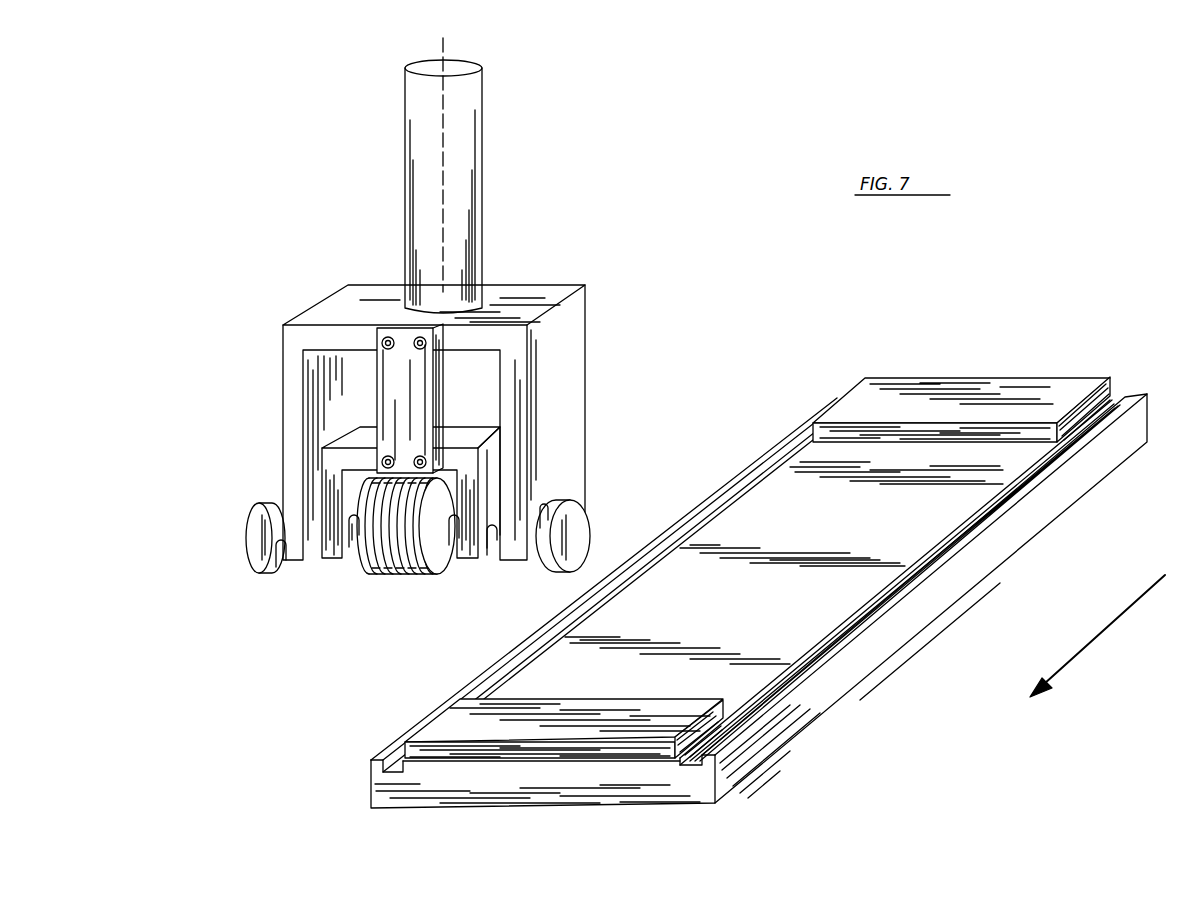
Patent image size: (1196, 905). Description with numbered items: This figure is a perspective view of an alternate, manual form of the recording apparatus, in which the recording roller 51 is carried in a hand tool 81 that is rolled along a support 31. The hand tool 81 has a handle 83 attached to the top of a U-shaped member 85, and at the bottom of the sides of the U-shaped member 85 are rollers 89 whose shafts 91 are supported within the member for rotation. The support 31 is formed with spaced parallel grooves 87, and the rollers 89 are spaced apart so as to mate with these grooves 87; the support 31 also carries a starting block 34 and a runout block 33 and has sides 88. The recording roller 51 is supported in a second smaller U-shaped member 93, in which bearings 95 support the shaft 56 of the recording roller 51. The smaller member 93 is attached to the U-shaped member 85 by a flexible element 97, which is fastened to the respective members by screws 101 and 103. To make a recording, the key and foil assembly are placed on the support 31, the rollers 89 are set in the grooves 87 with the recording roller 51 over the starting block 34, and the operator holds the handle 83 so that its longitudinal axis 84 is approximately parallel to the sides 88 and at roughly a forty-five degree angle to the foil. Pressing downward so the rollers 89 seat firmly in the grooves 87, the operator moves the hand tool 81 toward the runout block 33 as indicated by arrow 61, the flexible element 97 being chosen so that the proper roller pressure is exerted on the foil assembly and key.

The support 31 is at (860, 653).
The runout block 33 is at (648, 708).
The starting block 34 is at (1013, 383).
The recording roller 51 is at (427, 578).
The shaft 56 is at (457, 577).
The arrow 61 is at (1103, 632).
The hand tool 81 is at (580, 238).
The handle 83 is at (483, 113).
The longitudinal axis 84 is at (447, 167).
The U-shaped member 85 is at (587, 318).
The grooves 87 is at (371, 760).
The sides 88 is at (1070, 487).
The rollers 89 is at (256, 510).
The shafts 91 is at (265, 572).
The second smaller U-shaped member 93 is at (327, 557).
The bearings 95 is at (358, 549).
The flexible element 97 is at (397, 382).
The screws 101 is at (380, 340).
The screws 103 is at (430, 462).